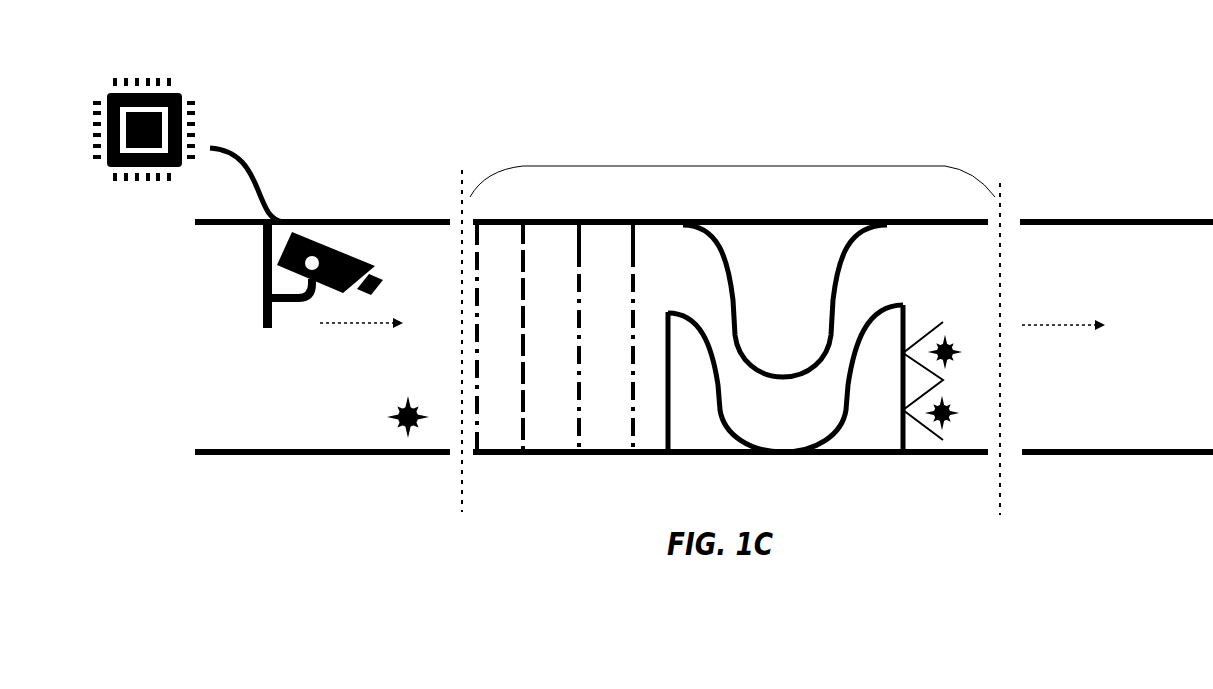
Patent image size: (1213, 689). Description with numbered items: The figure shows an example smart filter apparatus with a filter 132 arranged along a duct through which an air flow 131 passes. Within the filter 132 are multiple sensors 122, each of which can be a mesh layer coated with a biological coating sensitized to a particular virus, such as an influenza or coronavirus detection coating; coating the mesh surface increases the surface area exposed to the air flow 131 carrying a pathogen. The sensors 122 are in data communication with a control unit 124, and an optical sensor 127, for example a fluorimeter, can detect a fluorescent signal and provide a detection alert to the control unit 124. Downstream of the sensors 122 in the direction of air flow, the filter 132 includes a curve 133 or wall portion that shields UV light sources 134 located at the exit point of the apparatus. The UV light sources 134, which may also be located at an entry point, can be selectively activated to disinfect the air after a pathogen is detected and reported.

The sensors 122 is at (472, 437).
The control unit 124 is at (177, 92).
The optical sensor 127 is at (313, 230).
The air flow 131 is at (1085, 325).
The filter 132 is at (733, 166).
The curve 133 is at (790, 417).
The UV light sources 134 is at (408, 430).